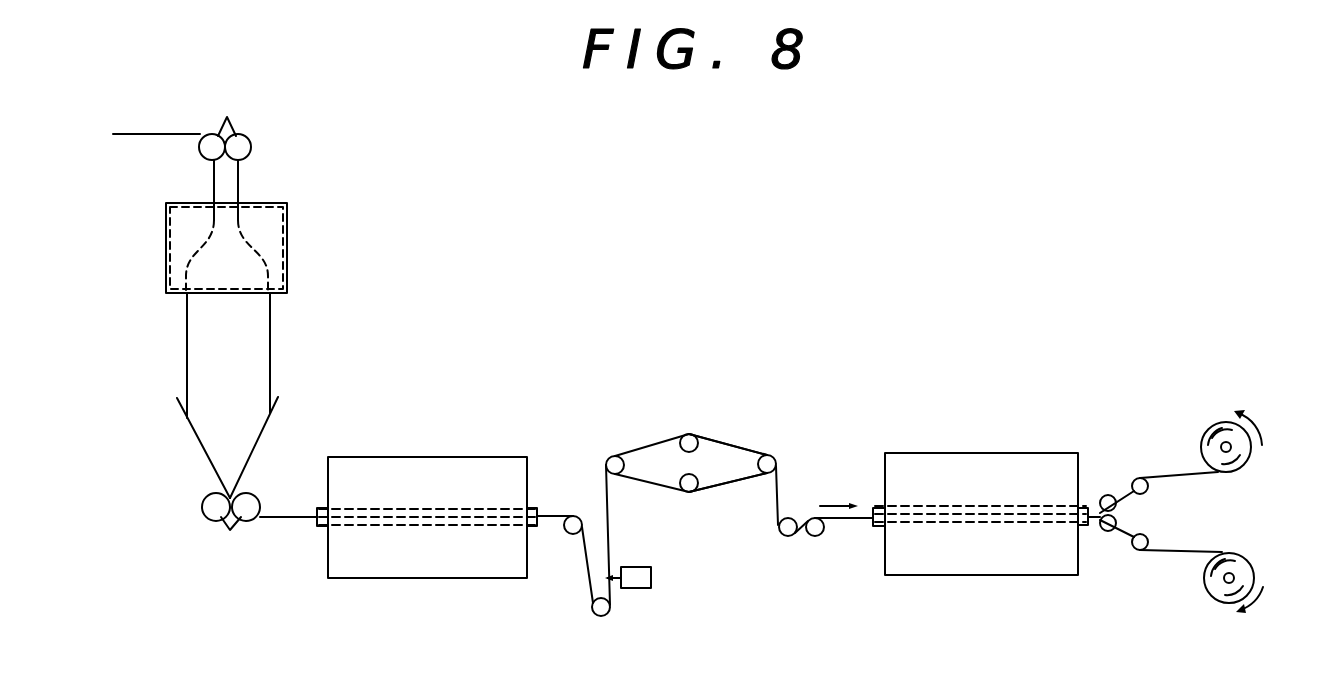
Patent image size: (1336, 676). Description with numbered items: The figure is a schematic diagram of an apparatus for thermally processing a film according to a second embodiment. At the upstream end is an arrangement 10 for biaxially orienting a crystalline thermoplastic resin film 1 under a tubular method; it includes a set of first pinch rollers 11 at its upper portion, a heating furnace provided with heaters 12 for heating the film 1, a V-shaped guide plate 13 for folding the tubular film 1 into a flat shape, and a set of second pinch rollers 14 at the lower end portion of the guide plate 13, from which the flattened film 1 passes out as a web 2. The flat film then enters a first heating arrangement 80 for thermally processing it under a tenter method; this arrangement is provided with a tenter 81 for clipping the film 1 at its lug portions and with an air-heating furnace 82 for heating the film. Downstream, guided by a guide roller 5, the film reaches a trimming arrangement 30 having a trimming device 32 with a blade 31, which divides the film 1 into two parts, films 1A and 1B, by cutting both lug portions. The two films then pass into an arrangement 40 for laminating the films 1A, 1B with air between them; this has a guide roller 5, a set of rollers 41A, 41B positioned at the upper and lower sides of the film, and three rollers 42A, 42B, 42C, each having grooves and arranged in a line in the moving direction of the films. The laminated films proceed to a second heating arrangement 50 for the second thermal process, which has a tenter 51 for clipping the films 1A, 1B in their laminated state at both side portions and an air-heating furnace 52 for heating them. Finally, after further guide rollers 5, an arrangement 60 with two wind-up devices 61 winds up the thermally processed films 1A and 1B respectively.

The crystalline thermoplastic resin film 1 is at (155, 134).
The first pinch rollers 11 is at (227, 117).
The arrangement for biaxially orienting a crystalline thermoplastic resin film 10 is at (166, 282).
The heaters 12 is at (170, 236).
The V-shaped guide plate 13 is at (287, 207).
The extruded film 2 is at (270, 336).
The second pinch rollers 14 is at (230, 530).
The first heating arrangement 80 is at (383, 457).
The tenter 81 is at (317, 530).
The air-heating furnace 82 is at (458, 465).
The guide roller 5 is at (568, 528).
The trimming device 32 is at (634, 567).
The trimming arrangement 30 is at (655, 580).
The blade 31 is at (617, 586).
The arrangement for laminating the films 40 is at (772, 438).
The roller 41A is at (688, 434).
The roller 41B is at (689, 492).
The film 1A is at (736, 441).
The film 1B is at (737, 470).
The grooved roller 42A is at (777, 463).
The grooved roller 42B is at (787, 537).
The grooved roller 42C is at (816, 537).
The tenter 51 is at (873, 526).
The second heating arrangement 50 is at (978, 447).
The air-heating furnace 52 is at (920, 460).
The wind-up device 61 is at (1222, 445).
The wind-up arrangement 60 is at (1244, 479).